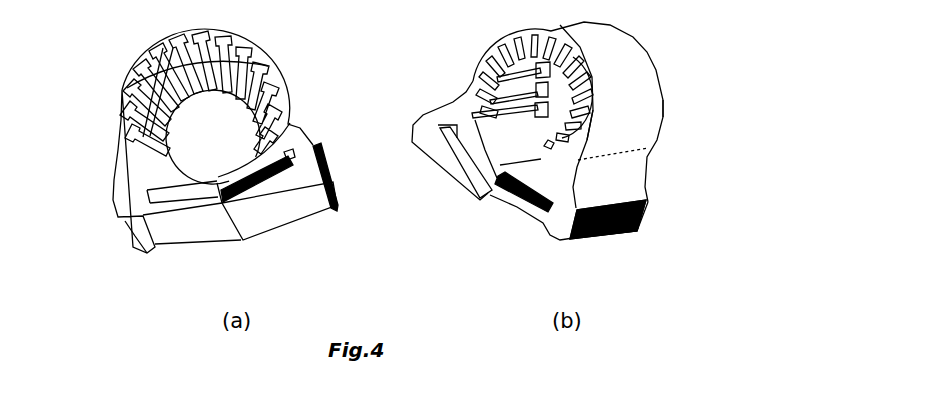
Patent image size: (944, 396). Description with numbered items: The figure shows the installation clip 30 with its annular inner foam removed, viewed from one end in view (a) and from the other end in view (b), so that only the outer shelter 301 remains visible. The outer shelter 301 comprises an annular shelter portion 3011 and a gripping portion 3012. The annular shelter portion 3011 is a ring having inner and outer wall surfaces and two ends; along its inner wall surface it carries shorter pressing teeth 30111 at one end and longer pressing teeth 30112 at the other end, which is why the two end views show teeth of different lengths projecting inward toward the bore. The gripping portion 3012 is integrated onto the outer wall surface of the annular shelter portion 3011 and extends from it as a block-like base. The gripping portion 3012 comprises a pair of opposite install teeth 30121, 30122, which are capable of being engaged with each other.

The installation clip 30 is at (240, 278).
The outer shelter 301 is at (677, 128).
The annular shelter portion 3011 is at (613, 58).
The gripping portion 3012 is at (645, 223).
The shorter pressing teeth 30111 is at (477, 100).
The longer pressing teeth 30112 is at (528, 43).
The install tooth 30121 is at (143, 205).
The install tooth 30122 is at (128, 88).